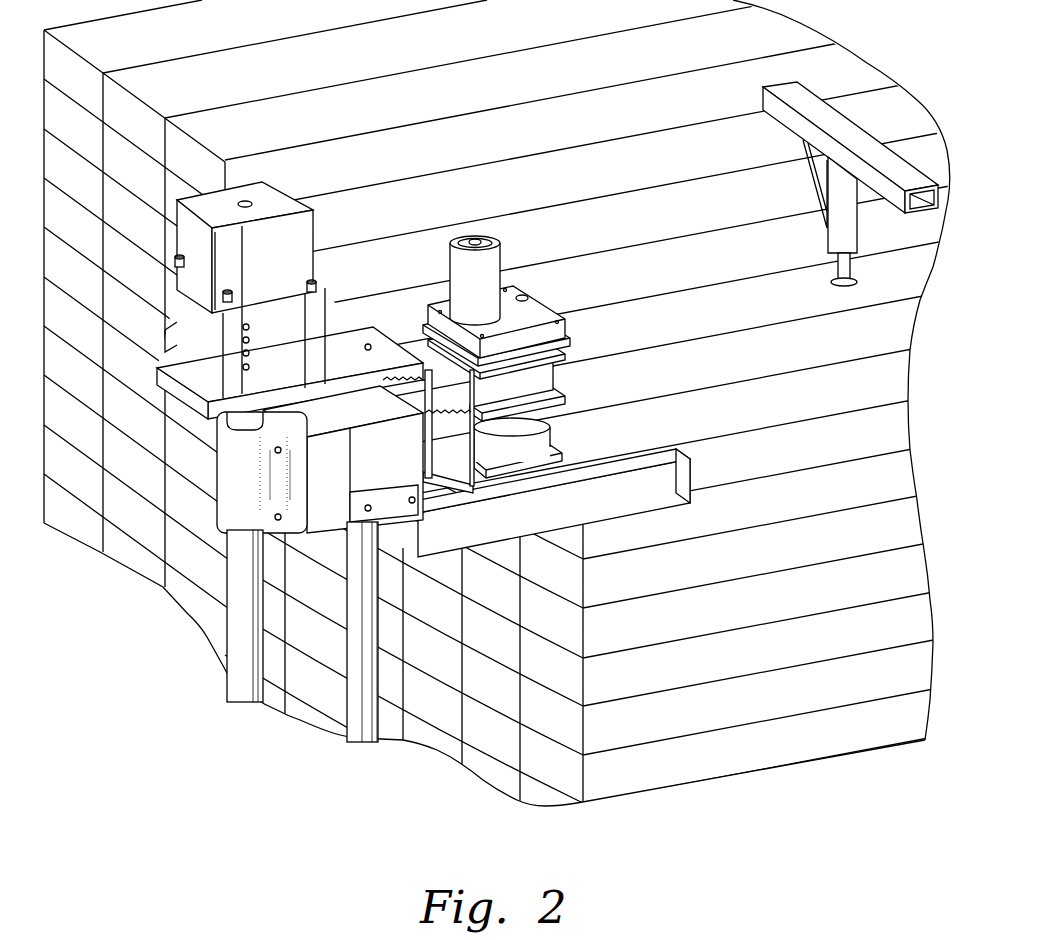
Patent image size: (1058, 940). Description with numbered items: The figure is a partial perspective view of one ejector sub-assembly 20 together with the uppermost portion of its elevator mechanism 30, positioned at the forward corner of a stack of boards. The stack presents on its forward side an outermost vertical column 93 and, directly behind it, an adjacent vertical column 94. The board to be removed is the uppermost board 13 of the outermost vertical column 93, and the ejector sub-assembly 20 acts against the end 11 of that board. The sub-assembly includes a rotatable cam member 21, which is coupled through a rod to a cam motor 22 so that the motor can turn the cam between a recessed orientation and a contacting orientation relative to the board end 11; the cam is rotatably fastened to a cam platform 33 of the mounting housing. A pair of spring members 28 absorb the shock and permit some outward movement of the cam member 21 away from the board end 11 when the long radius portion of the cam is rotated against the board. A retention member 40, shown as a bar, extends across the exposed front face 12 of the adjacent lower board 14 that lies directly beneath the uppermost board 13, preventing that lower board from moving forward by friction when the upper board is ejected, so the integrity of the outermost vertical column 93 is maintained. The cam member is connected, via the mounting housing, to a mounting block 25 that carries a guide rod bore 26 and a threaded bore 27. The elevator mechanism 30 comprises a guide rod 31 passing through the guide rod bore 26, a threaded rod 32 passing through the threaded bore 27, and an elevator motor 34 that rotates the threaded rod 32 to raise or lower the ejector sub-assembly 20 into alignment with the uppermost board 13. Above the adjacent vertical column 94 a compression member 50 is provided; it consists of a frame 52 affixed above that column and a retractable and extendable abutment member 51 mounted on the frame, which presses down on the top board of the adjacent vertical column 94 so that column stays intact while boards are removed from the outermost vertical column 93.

The end of the uppermost board 11 is at (570, 425).
The exposed front face 12 is at (630, 433).
The uppermost board 13 is at (762, 375).
The adjacent lower board 14 is at (793, 462).
The ejector sub-assembly 20 is at (497, 338).
The rotatable cam member 21 is at (513, 445).
The cam motor 22 is at (450, 256).
The mounting block 25 is at (320, 492).
The guide rod bore 26 is at (360, 397).
The threaded bore 27 is at (230, 430).
The spring members 28 is at (442, 415).
The elevator mechanism 30 is at (246, 422).
The guide rod 31 is at (368, 708).
The threaded rod 32 is at (243, 638).
The cam platform 33 is at (190, 335).
The elevator motor 34 is at (278, 203).
The retention member 40 is at (615, 492).
The compression member 50 is at (800, 193).
The abutment member 51 is at (830, 283).
The frame 52 is at (763, 88).
The outermost vertical column 93 is at (535, 680).
The adjacent vertical column 94 is at (490, 684).